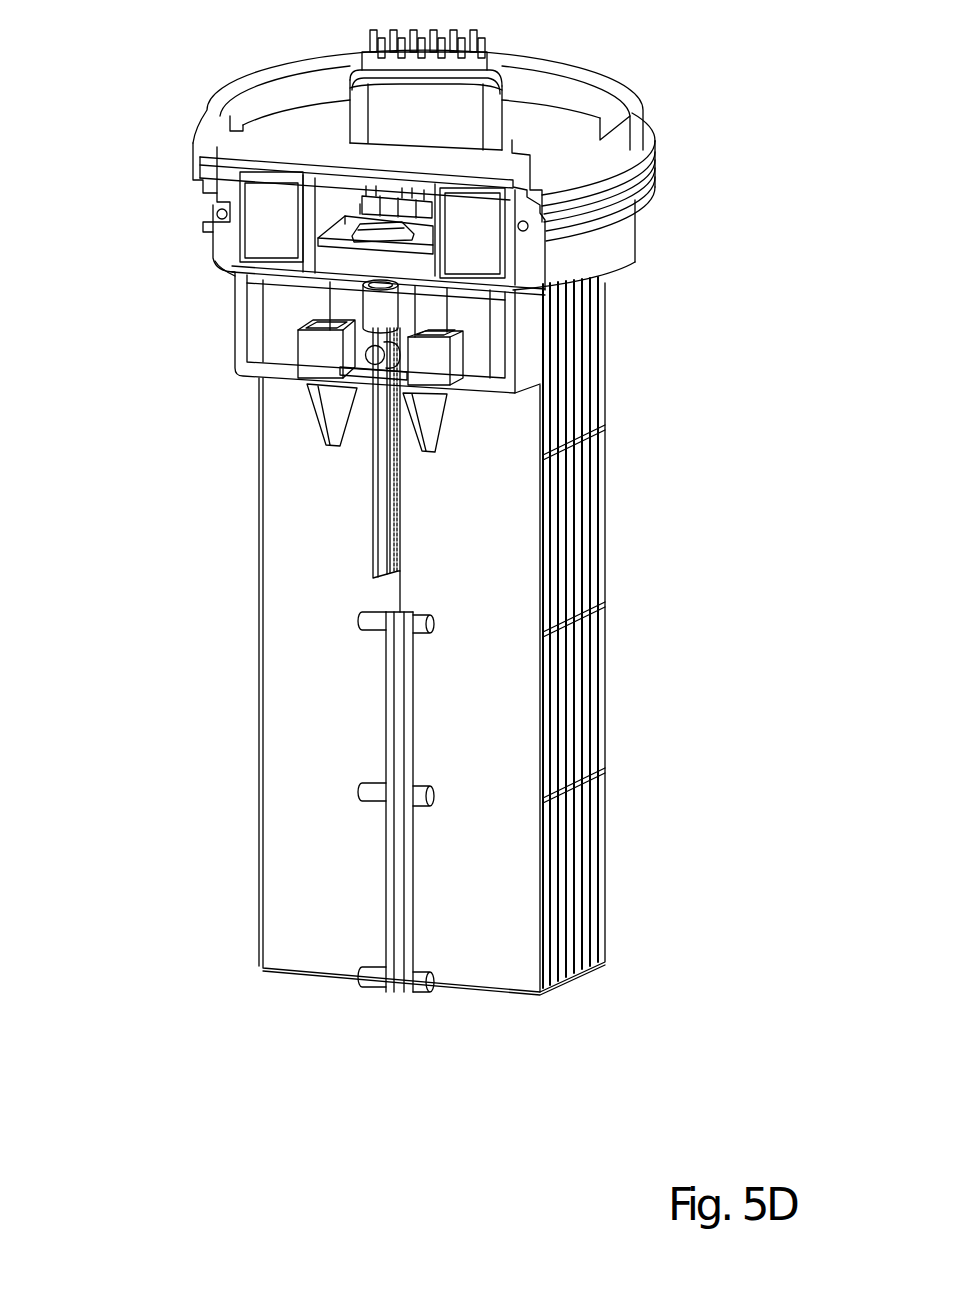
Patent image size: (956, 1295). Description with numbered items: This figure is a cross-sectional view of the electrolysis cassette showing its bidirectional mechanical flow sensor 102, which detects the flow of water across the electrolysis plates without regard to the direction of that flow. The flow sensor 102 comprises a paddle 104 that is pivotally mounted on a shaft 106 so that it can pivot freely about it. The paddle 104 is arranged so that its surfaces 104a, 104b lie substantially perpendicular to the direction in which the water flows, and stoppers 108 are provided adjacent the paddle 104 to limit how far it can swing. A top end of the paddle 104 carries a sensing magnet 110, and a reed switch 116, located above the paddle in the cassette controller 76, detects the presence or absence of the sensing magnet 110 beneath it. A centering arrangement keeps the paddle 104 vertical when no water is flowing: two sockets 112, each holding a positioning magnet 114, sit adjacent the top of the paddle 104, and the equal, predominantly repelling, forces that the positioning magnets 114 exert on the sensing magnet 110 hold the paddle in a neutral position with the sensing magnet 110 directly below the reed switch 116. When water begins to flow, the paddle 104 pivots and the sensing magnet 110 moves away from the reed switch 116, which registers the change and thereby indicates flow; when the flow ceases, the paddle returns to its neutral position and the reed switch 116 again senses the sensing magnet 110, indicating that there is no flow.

The cassette controller 76 is at (425, 232).
The bidirectional mechanical flow sensor 102 is at (395, 512).
The paddle 104 is at (329, 636).
The surface of the paddle 104a is at (397, 548).
The surface of the paddle 104b is at (370, 462).
The shaft 106 is at (380, 353).
The stoppers 108 is at (327, 423).
The sensing magnet 110 is at (345, 277).
The sockets 112 is at (312, 348).
The positioning magnets 114 is at (317, 321).
The reed switch 116 is at (400, 232).